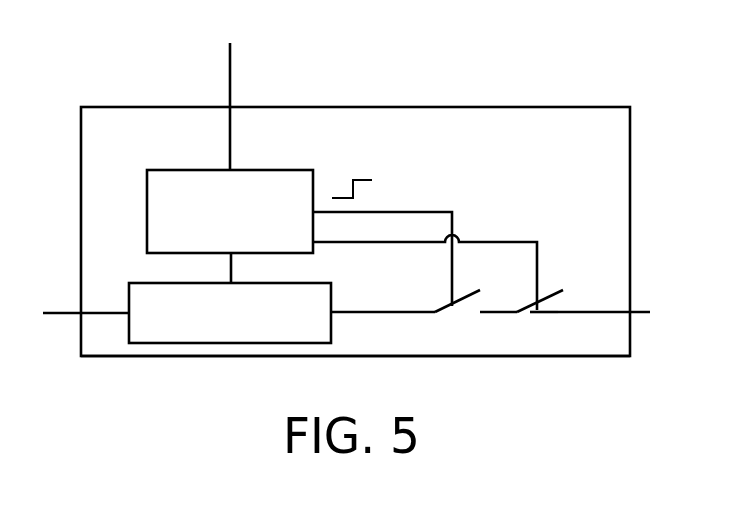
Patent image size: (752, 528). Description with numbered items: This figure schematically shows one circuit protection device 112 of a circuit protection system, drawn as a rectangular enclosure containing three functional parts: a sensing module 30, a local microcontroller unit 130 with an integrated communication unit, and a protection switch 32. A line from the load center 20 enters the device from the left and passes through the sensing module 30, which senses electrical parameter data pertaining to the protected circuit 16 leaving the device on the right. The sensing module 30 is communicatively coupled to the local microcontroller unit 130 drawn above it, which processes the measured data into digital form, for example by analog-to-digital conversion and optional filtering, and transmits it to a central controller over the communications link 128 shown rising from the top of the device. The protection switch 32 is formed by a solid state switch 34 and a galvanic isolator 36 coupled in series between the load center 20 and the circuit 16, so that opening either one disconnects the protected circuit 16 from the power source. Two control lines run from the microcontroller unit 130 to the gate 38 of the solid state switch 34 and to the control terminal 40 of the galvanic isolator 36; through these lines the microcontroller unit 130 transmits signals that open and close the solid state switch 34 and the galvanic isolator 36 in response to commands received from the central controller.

The circuit protection device 112 is at (567, 107).
The communications link 128 is at (231, 72).
The local microcontroller unit 130 is at (157, 169).
The sensing module 30 is at (142, 282).
The load center 20 is at (57, 314).
The protected circuit 16 is at (640, 315).
The gate 38 is at (427, 290).
The solid state switch 34 is at (460, 288).
The galvanic isolator 36 is at (543, 288).
The control terminal 40 is at (532, 318).
The protection switch 32 is at (508, 362).